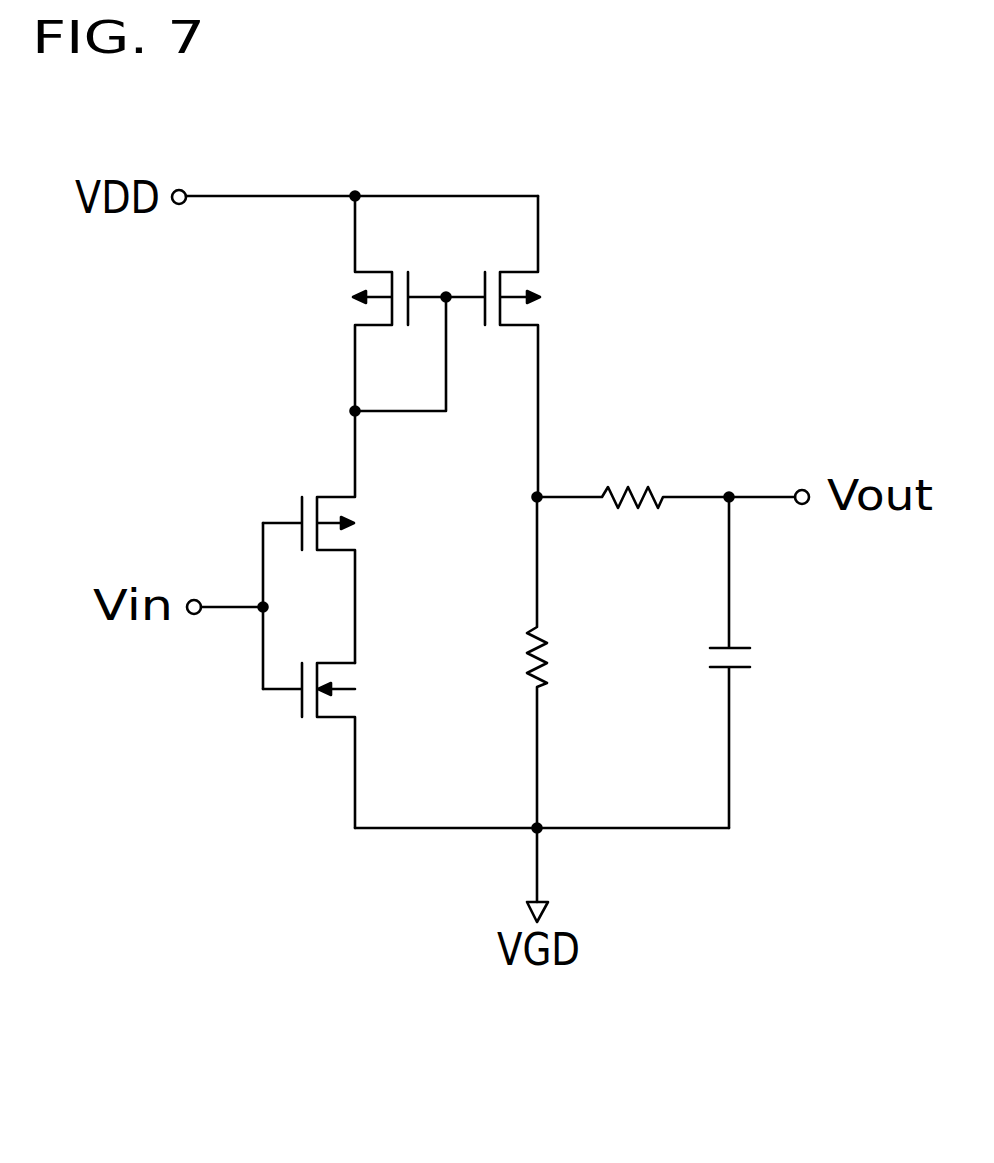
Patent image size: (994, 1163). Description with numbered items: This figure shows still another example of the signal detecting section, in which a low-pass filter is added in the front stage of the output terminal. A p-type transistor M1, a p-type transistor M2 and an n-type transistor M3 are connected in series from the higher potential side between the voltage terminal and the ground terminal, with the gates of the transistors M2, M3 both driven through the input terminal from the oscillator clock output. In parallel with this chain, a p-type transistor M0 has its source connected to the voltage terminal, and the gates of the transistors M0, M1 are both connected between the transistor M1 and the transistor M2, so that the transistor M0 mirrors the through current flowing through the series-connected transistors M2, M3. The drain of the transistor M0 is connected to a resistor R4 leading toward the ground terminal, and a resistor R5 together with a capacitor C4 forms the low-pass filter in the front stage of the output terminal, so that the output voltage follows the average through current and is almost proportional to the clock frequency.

The p-type transistor M0 is at (543, 310).
The p-type transistor M1 is at (350, 288).
The p-type transistor M2 is at (363, 512).
The n-type transistor M3 is at (360, 700).
The resistor R4 is at (550, 661).
The resistor R5 is at (641, 487).
The capacitor C4 is at (757, 657).